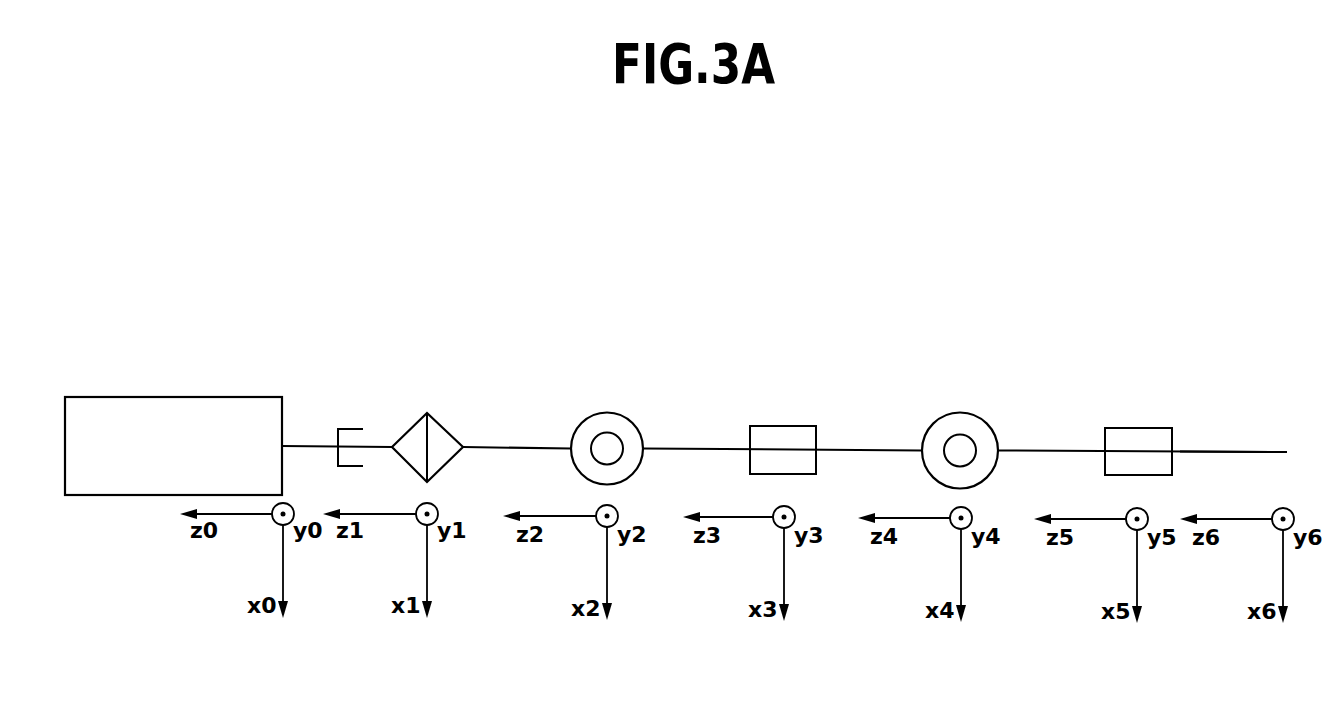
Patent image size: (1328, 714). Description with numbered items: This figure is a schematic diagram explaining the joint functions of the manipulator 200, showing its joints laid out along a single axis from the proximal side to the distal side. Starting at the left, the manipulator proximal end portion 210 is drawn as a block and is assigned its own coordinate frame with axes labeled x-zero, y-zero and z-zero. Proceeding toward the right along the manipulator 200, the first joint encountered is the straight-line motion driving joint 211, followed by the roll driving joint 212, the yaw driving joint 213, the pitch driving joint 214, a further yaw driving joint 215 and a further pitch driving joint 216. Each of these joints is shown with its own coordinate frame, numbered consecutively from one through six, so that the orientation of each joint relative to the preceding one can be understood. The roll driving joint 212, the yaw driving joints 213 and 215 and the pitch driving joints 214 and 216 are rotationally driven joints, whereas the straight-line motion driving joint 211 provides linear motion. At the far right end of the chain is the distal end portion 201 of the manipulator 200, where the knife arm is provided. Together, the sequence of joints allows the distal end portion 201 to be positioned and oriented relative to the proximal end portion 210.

The manipulator 200 is at (866, 320).
The distal end portion 201 is at (1254, 450).
The manipulator proximal end portion 210 is at (174, 397).
The straight-line motion driving joint 211 is at (351, 429).
The roll driving joint 212 is at (441, 425).
The yaw driving joint 213 is at (606, 413).
The pitch driving joint 214 is at (784, 426).
The yaw driving joint 215 is at (958, 413).
The pitch driving joint 216 is at (1138, 428).